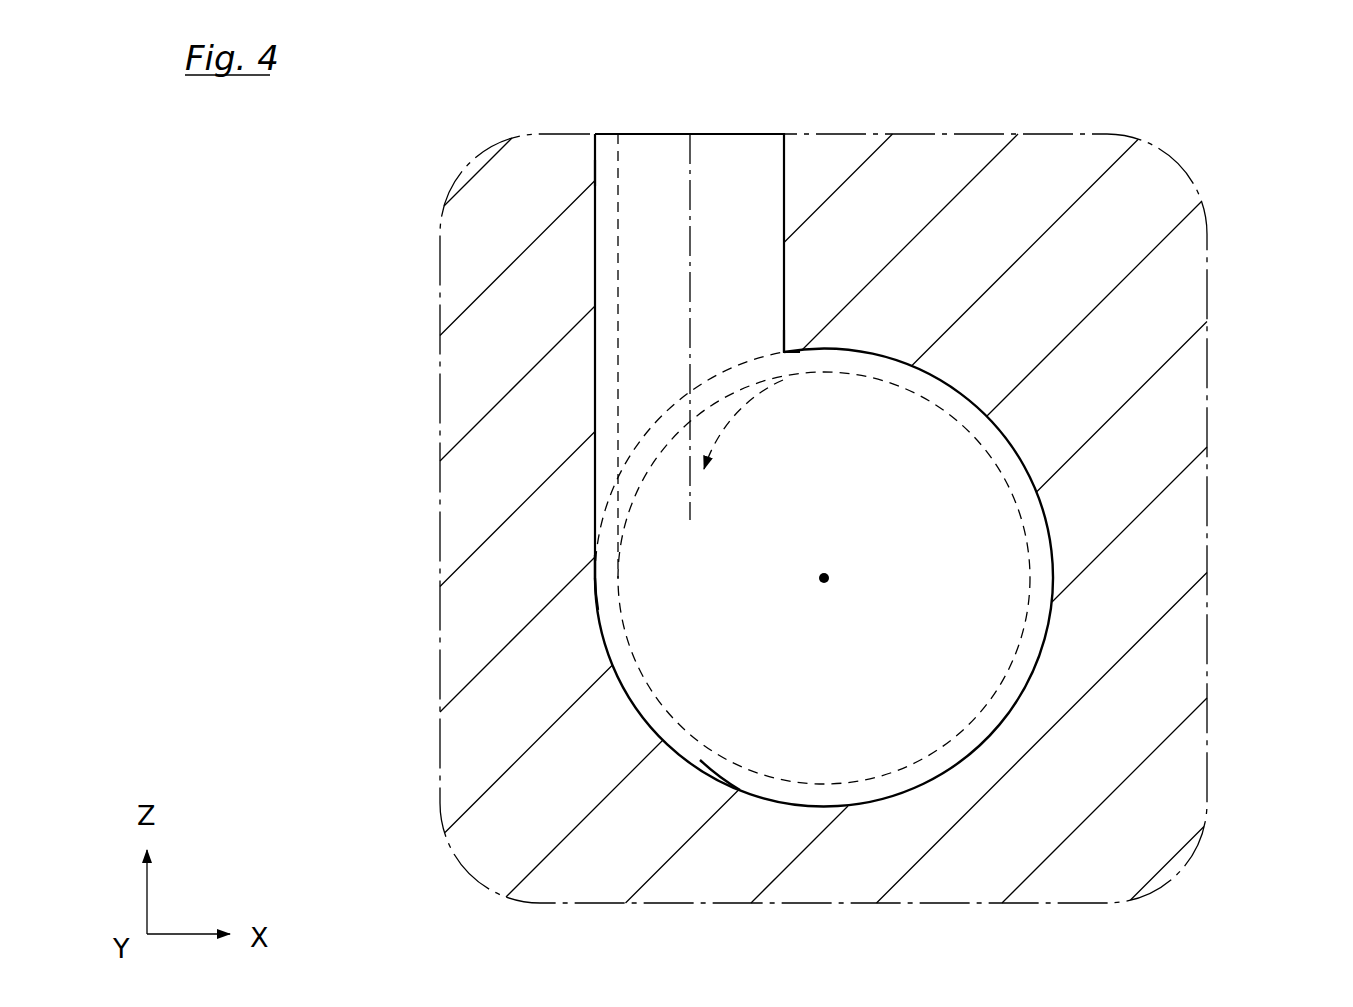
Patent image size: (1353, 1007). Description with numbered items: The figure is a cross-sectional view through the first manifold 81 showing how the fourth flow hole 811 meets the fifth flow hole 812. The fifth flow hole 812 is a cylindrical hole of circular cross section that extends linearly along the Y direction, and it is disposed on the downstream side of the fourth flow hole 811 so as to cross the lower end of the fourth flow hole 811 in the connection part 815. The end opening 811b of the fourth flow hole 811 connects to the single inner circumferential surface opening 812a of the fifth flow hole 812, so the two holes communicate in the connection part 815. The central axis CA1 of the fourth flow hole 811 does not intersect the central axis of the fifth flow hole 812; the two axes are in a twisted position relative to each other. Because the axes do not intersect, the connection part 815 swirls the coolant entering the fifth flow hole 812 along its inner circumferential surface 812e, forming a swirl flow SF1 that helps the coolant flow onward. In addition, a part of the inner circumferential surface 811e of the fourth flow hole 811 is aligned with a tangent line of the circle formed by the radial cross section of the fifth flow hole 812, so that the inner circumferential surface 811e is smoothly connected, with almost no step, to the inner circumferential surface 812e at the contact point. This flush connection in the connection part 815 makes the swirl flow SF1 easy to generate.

The first manifold 81 is at (1162, 163).
The fourth flow hole 811 is at (783, 174).
The end opening 811b is at (630, 453).
The inner circumferential surface 811e is at (597, 173).
The fifth flow hole 812 is at (905, 787).
The inner circumferential surface opening 812a is at (760, 353).
The inner circumferential surface 812e is at (747, 792).
The connection part 815 is at (597, 579).
The central axis CA1 is at (690, 208).
The swirl flow SF1 is at (1028, 552).